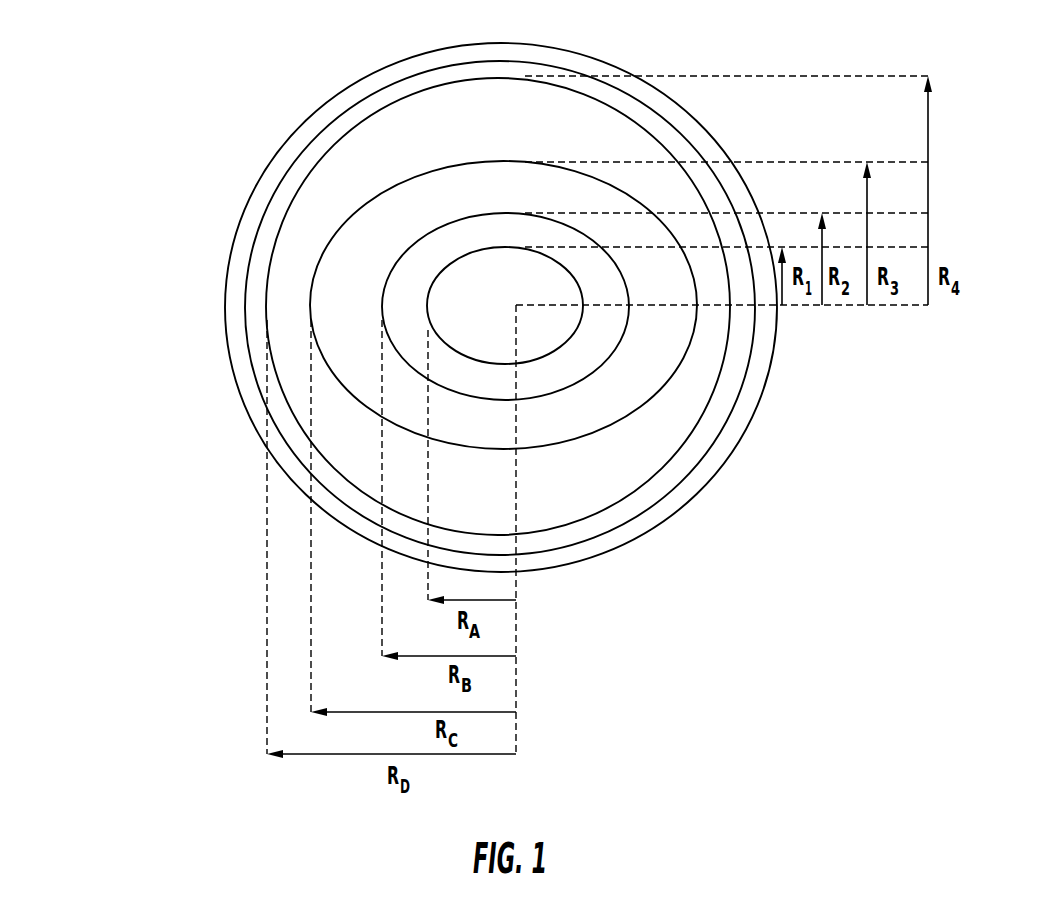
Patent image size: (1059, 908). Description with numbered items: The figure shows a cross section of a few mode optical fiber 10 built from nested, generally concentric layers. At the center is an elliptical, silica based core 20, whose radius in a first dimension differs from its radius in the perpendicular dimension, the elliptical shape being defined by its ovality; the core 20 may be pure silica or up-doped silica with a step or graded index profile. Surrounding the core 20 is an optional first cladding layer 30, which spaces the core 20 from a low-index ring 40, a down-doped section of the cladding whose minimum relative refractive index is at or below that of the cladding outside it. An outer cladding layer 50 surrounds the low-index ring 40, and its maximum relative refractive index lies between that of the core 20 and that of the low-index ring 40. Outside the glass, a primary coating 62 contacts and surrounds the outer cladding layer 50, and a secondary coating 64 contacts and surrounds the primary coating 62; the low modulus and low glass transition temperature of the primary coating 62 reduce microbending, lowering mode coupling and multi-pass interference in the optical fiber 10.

The few mode optical fiber 10 is at (160, 111).
The core 20 is at (478, 268).
The first cladding layer 30 is at (400, 283).
The low-index ring 40 is at (325, 295).
The outer cladding layer 50 is at (283, 330).
The primary coating 62 is at (286, 419).
The secondary coating 64 is at (298, 480).